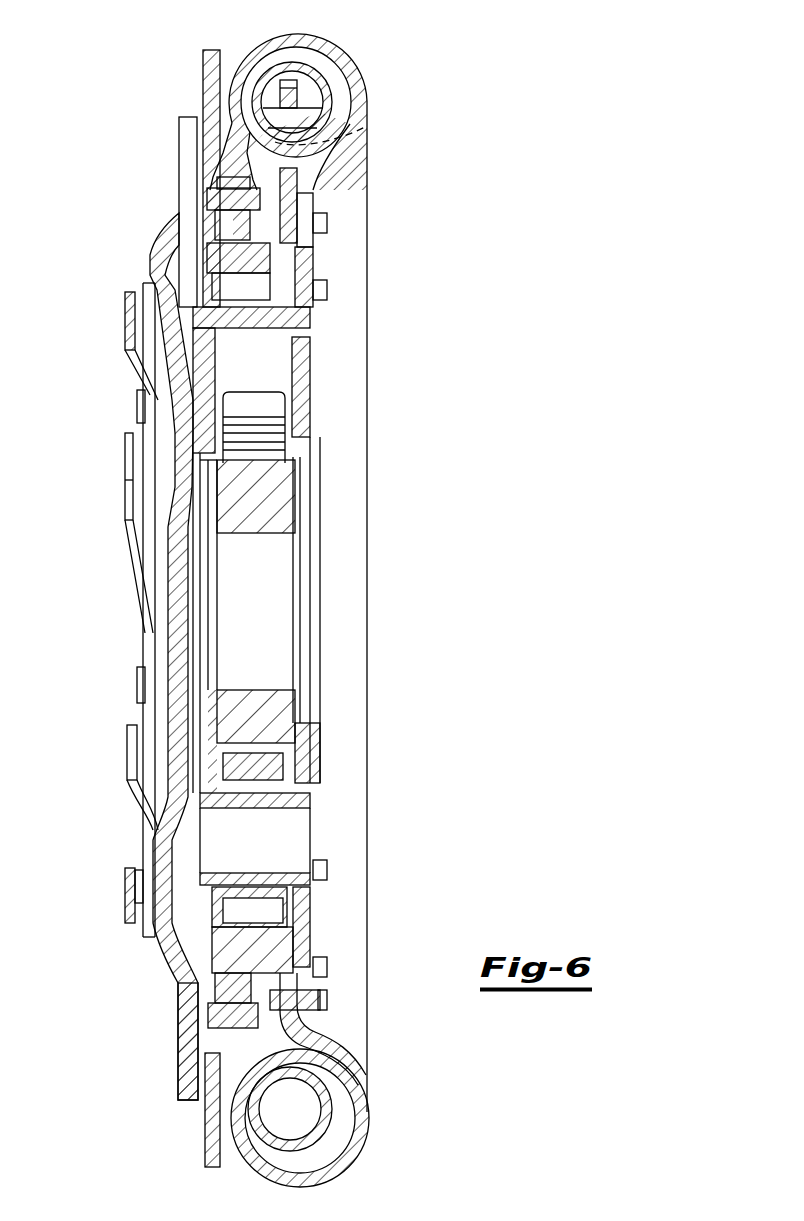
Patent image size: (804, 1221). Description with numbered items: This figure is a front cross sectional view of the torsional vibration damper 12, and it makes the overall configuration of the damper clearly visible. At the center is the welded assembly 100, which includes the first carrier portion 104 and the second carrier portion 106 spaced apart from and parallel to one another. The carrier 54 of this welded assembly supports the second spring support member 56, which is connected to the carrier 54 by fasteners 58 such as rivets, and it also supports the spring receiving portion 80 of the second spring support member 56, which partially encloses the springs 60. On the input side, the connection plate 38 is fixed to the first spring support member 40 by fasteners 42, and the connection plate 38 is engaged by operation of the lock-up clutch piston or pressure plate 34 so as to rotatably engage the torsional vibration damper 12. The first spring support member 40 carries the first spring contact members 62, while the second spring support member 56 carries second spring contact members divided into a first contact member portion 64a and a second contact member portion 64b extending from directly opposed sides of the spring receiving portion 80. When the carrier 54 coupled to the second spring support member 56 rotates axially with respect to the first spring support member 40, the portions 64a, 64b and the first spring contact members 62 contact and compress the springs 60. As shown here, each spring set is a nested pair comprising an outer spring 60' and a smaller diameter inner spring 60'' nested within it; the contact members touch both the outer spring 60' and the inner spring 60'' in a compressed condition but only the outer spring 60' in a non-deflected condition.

The torsional vibration damper 12 is at (465, 62).
The lock-up clutch piston or pressure plate 34 is at (152, 265).
The connection plate 38 is at (213, 88).
The first spring support member 40 is at (230, 146).
The fasteners 42 is at (215, 198).
The carrier 54 is at (305, 255).
The second spring support member 56 is at (290, 208).
The fasteners 58 is at (320, 222).
The springs 60 is at (268, 98).
The outer spring 60' is at (343, 1118).
The inner spring 60'' is at (327, 1136).
The first spring contact members 62 is at (305, 118).
The first contact member portion 64a is at (288, 88).
The second contact member portion 64b is at (365, 127).
The spring receiving portion 80 is at (289, 40).
The welded assembly 100 is at (304, 634).
The first carrier portion 104 is at (205, 596).
The second carrier portion 106 is at (300, 536).